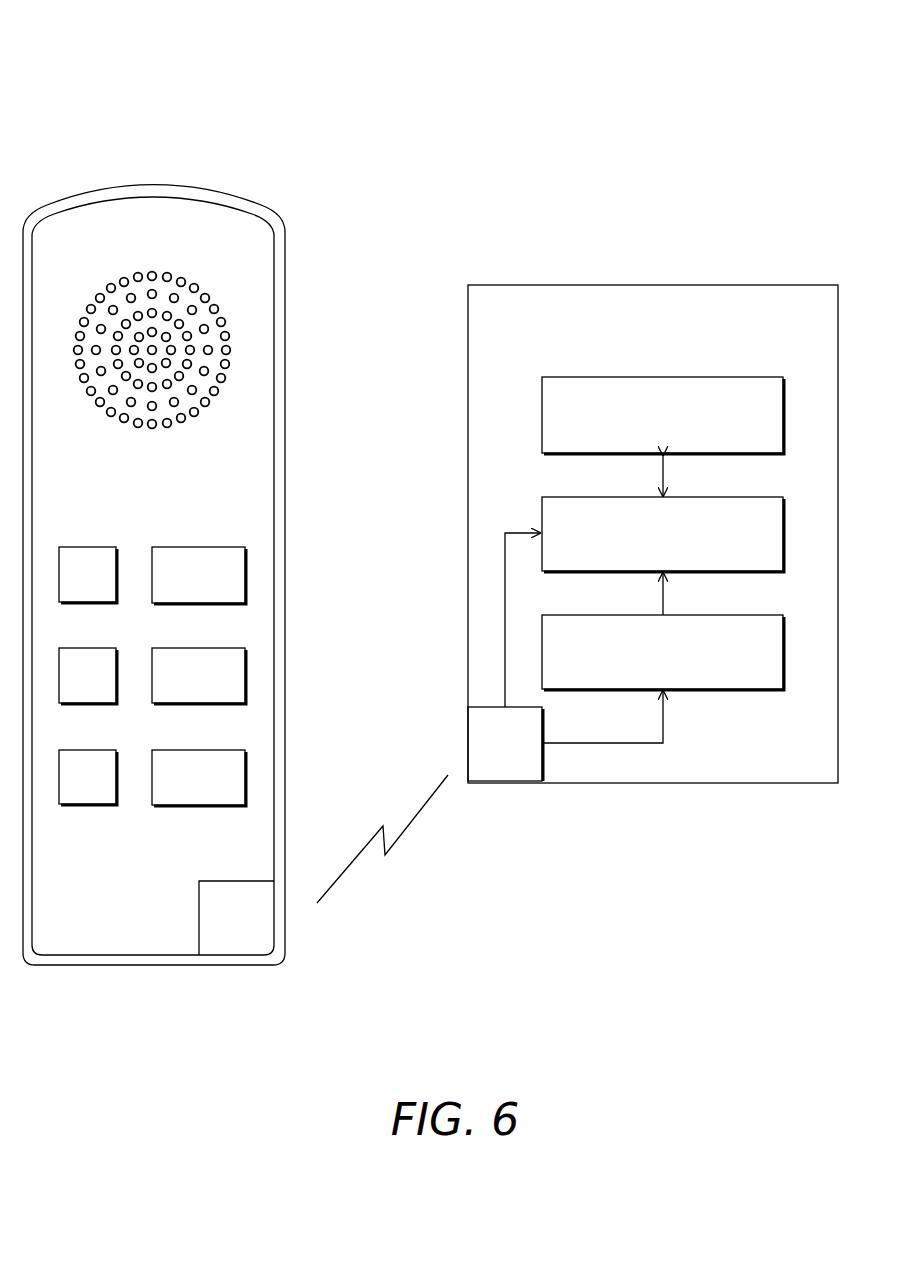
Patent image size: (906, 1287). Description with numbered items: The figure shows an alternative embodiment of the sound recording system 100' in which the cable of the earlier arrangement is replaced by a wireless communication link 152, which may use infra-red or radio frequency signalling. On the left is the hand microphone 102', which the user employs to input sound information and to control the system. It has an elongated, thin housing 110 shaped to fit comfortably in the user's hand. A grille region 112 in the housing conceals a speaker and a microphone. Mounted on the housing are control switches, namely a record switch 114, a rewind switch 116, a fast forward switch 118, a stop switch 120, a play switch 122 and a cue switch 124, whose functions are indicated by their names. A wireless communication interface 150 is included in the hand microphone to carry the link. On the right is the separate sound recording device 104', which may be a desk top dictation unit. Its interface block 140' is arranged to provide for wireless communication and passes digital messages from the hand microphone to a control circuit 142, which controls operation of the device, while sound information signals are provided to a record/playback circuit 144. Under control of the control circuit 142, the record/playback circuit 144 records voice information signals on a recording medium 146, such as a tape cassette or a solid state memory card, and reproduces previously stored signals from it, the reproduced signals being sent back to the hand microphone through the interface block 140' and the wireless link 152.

The sound recording system 100' is at (75, 56).
The hand microphone 102' is at (191, 575).
The sound recording device 104' is at (625, 534).
The housing 110 is at (257, 842).
The grille region 112 is at (220, 293).
The record switch 114 is at (188, 648).
The rewind switch 116 is at (188, 750).
The fast forward switch 118 is at (205, 547).
The stop switch 120 is at (86, 648).
The play switch 122 is at (86, 750).
The cue switch 124 is at (97, 547).
The interface block 140' is at (476, 737).
The control circuit 142 is at (710, 689).
The record/playback circuit 144 is at (540, 516).
The recording medium 146 is at (718, 377).
The wireless communication interface 150 is at (285, 930).
The wireless communication link 152 is at (413, 822).